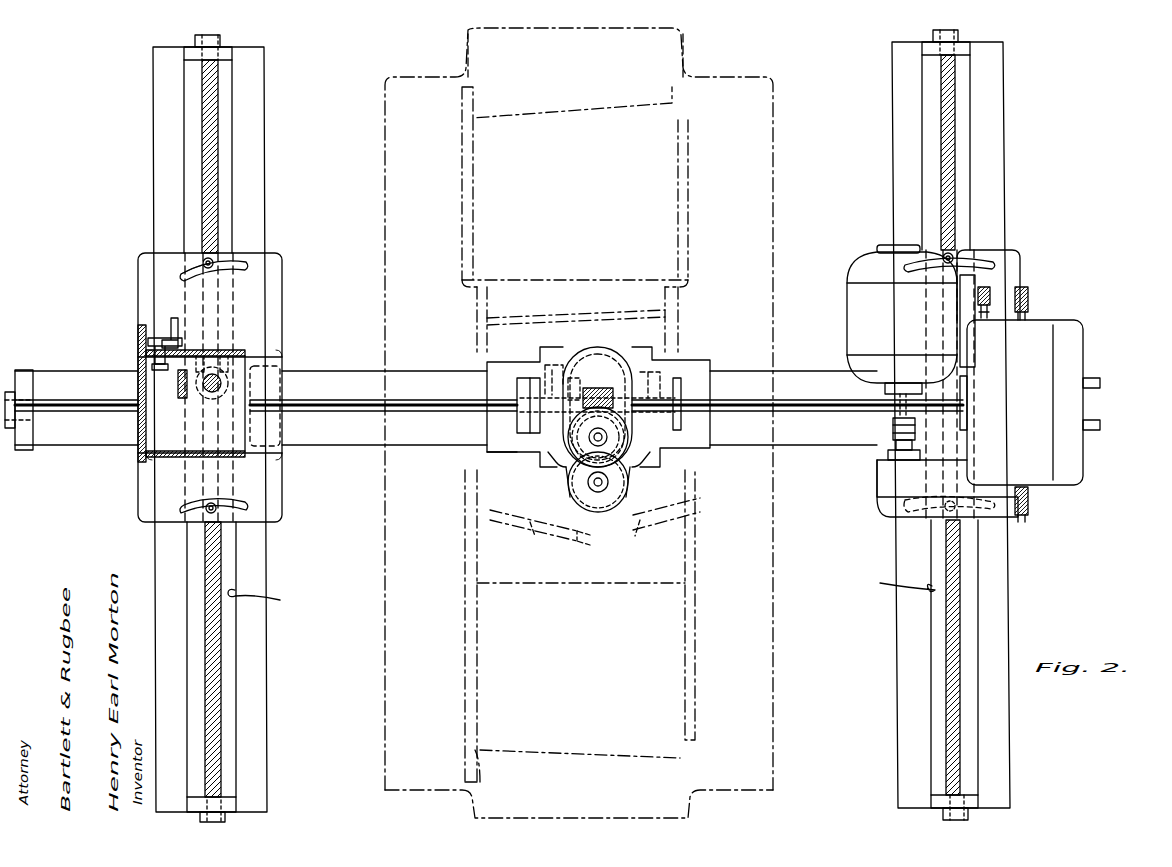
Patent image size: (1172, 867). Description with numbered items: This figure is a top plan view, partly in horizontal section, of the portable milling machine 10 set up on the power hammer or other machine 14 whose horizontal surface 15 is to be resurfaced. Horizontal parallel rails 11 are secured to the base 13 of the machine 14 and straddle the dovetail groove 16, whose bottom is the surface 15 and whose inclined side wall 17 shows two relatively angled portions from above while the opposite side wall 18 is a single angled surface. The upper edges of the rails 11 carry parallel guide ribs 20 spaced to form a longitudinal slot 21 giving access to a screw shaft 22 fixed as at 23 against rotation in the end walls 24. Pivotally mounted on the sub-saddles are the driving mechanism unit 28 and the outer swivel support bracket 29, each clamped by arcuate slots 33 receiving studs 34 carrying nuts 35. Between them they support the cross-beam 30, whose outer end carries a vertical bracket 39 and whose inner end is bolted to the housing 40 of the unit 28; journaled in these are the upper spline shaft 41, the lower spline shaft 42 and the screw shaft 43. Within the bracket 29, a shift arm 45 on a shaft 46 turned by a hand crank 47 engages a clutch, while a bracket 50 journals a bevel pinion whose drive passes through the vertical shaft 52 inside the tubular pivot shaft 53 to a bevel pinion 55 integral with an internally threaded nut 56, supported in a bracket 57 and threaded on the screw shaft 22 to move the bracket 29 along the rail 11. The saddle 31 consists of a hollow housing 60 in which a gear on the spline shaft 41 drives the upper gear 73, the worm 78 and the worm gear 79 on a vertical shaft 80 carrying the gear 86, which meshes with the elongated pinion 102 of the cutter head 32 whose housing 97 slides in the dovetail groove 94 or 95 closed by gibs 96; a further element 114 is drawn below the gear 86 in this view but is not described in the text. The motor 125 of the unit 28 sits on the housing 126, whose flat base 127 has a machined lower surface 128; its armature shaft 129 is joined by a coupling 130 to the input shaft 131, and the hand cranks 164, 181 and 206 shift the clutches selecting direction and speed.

The portable milling machine 10 is at (792, 272).
The horizontal parallel rails 11 is at (277, 729).
The base 13 is at (690, 248).
The power hammer or other machine 14 is at (696, 66).
The horizontal surface 15 is at (672, 502).
The dovetail groove 16 is at (498, 490).
The side wall 17 is at (530, 540).
The side wall 18 is at (612, 315).
The guide ribs 20 is at (166, 667).
The longitudinal slot 21 is at (581, 590).
The screw shaft 22 is at (215, 160).
The fixing of screw shaft 23 is at (222, 38).
The end walls 24 is at (186, 50).
The driving mechanism unit 28 is at (1052, 493).
The outer swivel support bracket 29 is at (291, 329).
The cross-beam 30 is at (74, 365).
The saddle 31 is at (701, 353).
The cutter head 32 is at (562, 502).
The arcuate slots 33 is at (238, 262).
The studs 34 is at (203, 268).
The nuts 35 is at (214, 268).
The vertical bracket 39 is at (24, 368).
The housing 40 is at (867, 472).
The upper spline shaft 41 is at (90, 402).
The lower spline shaft 42 is at (1090, 378).
The screw shaft 43 is at (1090, 432).
The shift arm 45 is at (158, 370).
The shaft 46 is at (148, 352).
The hand crank 47 is at (165, 340).
The bracket 50 is at (180, 400).
The vertical shaft 52 is at (220, 398).
The tubular pivot shaft 53 is at (206, 395).
The bevel pinion 55 is at (240, 383).
The internally threaded nut 56 is at (208, 350).
The bracket 57 is at (226, 350).
The hollow housing 60 is at (540, 372).
The upper gear 73 is at (682, 386).
The worm 78 is at (600, 387).
The worm gear 79 is at (565, 425).
The vertical shaft 80 is at (598, 437).
The gear 86 is at (535, 446).
The vertical dovetail groove 94 is at (644, 462).
The vertical dovetail groove 95 is at (560, 355).
The gibs 96 is at (552, 462).
The housing 97 is at (593, 515).
The elongated pinion 102 is at (598, 543).
The lower gear 114 is at (598, 482).
The motor 125 is at (850, 333).
The housing 126 is at (862, 500).
The flat base 127 is at (1018, 252).
The machined lower surface 128 is at (1035, 274).
The armature shaft 129 is at (918, 392).
The coupling 130 is at (916, 426).
The input shaft 131 is at (912, 452).
The shaft crank 164 is at (1028, 303).
The hand crank 181 is at (989, 300).
The hand crank 206 is at (1028, 512).